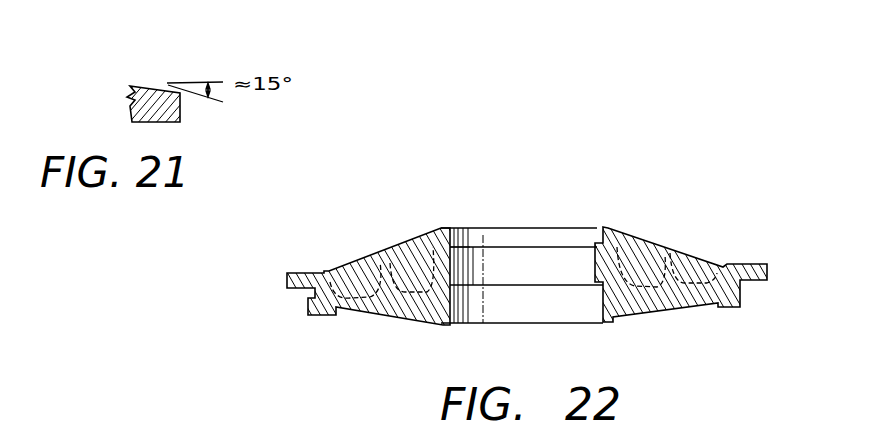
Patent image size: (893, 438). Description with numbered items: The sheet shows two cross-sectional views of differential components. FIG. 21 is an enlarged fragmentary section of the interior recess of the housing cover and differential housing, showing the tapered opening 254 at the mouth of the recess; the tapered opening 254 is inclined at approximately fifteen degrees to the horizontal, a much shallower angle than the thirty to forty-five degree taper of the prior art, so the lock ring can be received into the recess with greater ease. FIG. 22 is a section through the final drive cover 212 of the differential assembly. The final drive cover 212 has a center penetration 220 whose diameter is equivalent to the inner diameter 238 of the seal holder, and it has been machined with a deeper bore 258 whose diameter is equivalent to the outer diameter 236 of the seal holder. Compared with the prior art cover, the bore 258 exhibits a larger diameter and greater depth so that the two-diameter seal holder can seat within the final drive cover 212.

In FIG. 21, the tapered opening 254 is at (168, 86).
In FIG. 22, the final drive cover 212 is at (393, 213).
In FIG. 22, the center penetration 220 is at (526, 312).
In FIG. 22, the outer diameter 236 is at (594, 227).
In FIG. 22, the inner diameter 238 is at (597, 262).
In FIG. 22, the bore 258 is at (595, 247).